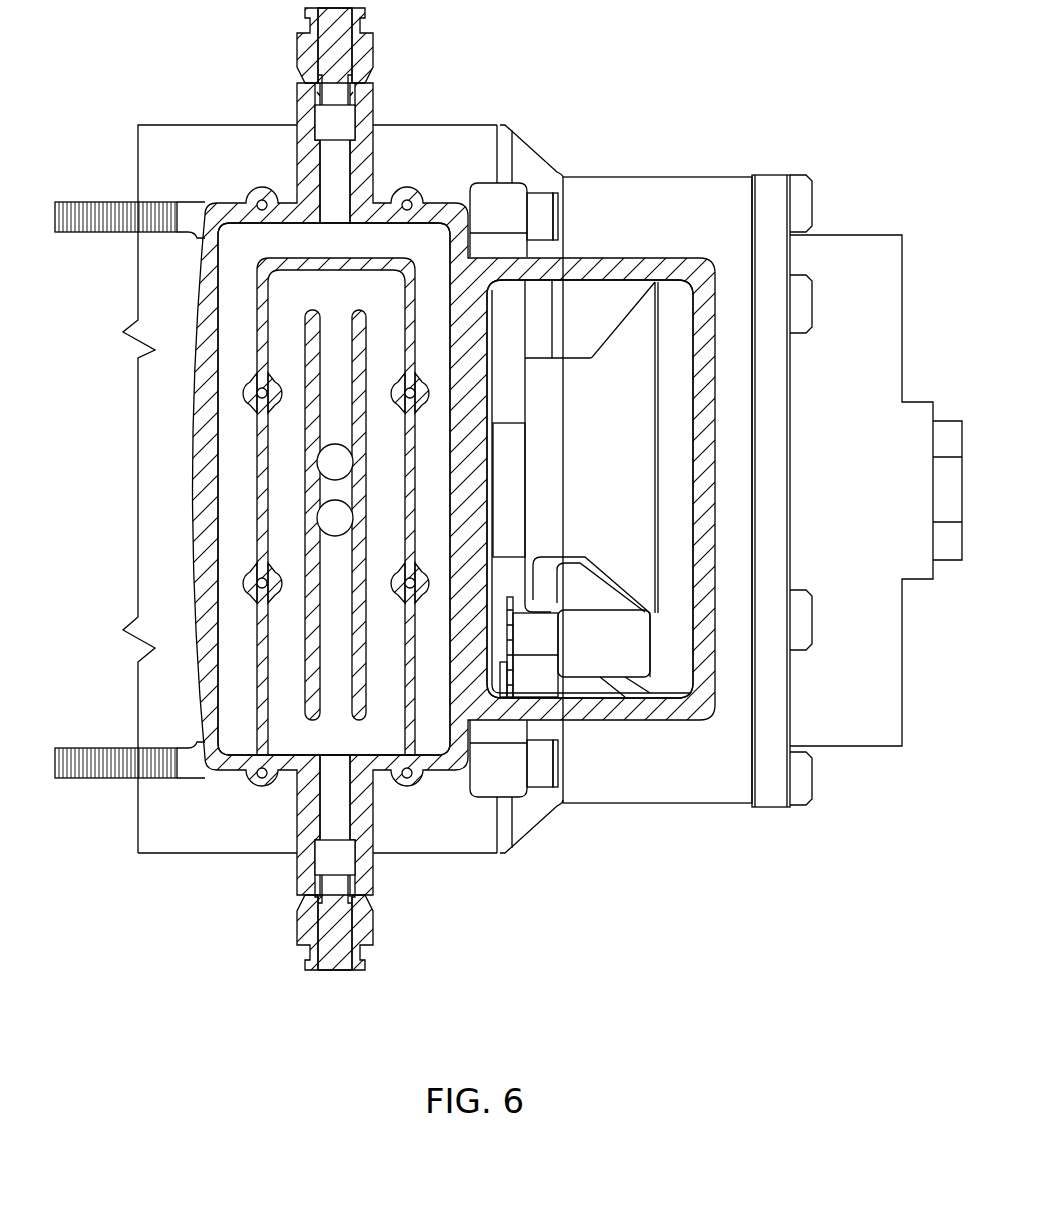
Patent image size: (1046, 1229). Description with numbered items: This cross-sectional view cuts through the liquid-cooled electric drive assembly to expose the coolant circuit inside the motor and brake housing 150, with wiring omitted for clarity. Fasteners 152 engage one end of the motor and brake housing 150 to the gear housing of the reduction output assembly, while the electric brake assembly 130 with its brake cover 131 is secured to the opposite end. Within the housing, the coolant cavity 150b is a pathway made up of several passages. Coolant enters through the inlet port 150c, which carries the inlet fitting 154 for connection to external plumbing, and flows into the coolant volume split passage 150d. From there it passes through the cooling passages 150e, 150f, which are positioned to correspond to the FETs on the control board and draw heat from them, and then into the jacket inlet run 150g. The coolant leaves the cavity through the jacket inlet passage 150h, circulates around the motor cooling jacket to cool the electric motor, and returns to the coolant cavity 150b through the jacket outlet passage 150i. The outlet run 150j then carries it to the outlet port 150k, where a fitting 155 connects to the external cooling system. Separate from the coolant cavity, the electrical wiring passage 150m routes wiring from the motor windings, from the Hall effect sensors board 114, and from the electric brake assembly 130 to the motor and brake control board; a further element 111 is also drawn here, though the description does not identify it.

The motor and brake housing 150 is at (222, 123).
The coolant cavity 150b is at (253, 248).
The inlet port 150c is at (335, 117).
The coolant volume split passage 150d is at (333, 235).
The cooling passage 150e is at (433, 330).
The cooling passage 150f is at (378, 630).
The jacket inlet run 150g is at (333, 388).
The jacket inlet passage 150h is at (335, 462).
The jacket outlet passage 150i is at (335, 518).
The outlet run 150j is at (333, 717).
The outlet port 150k is at (335, 860).
The electrical wiring passage 150m is at (583, 310).
The fasteners 152 is at (100, 207).
The inlet fitting 154 is at (373, 46).
The fitting 155 is at (373, 930).
The plate 111 is at (508, 487).
The Hall effect sensors board 114 is at (507, 600).
The electric brake assembly 130 is at (840, 772).
The brake cover 131 is at (866, 500).